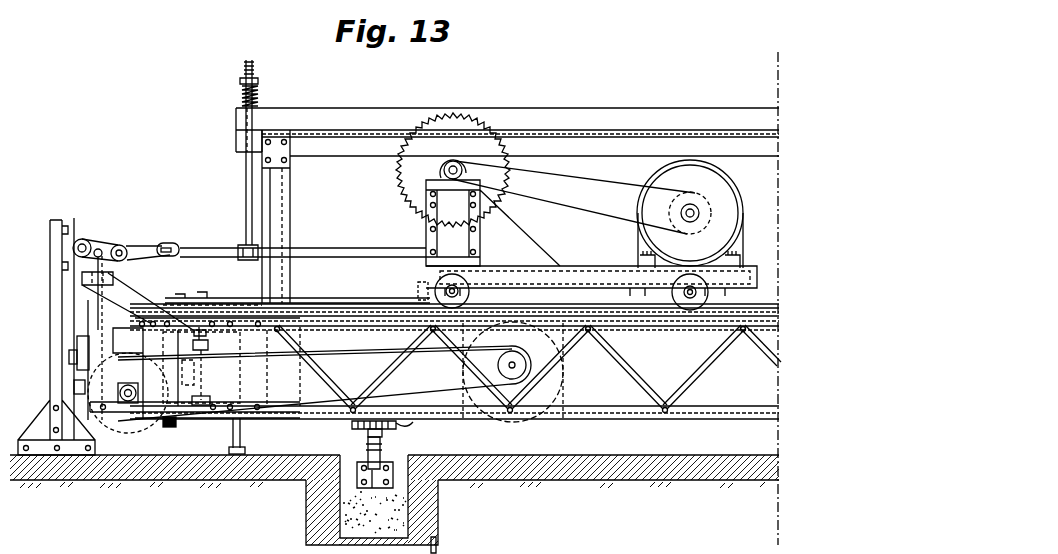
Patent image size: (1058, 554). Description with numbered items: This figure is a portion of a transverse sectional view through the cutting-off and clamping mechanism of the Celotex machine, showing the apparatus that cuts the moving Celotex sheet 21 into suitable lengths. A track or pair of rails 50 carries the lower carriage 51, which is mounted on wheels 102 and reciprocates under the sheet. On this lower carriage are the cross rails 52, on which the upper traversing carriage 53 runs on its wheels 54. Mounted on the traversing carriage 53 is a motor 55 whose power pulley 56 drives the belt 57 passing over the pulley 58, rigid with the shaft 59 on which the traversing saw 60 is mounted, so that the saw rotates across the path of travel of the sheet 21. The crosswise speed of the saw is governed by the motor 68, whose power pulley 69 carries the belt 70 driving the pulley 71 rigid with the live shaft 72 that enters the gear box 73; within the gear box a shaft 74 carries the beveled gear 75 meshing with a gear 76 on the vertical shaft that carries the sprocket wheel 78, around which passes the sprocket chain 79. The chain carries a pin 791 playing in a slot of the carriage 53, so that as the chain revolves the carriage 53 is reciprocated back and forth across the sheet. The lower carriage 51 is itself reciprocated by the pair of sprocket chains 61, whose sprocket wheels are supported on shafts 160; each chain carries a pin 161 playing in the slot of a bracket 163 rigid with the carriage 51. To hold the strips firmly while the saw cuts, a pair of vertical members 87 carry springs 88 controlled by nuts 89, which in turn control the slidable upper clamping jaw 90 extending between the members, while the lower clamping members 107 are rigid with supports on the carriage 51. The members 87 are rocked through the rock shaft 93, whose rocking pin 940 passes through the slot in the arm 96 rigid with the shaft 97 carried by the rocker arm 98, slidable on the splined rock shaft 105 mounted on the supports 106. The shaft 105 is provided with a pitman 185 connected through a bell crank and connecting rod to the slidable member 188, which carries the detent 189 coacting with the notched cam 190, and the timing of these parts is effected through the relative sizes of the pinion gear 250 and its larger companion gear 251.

The Celotex sheet 21 is at (622, 138).
The track or pair of rails 50 is at (245, 451).
The lower carriage 51 is at (623, 332).
The cross rails 52 is at (424, 303).
The upper traversing carriage 53 is at (590, 287).
The wheels 54 is at (470, 291).
The motor 55 is at (725, 183).
The power pulley 56 is at (678, 211).
The belt 57 is at (580, 180).
The pulley 58 is at (458, 162).
The shaft 59 is at (443, 167).
The traversing saw 60 is at (398, 171).
The sprocket chains 61 is at (384, 436).
The motor 68 is at (565, 353).
The power pulley 69 is at (508, 364).
The belt 70 is at (390, 356).
The pulley 71 is at (128, 427).
The shaft 72 is at (126, 385).
The gear box 73 is at (124, 334).
The shaft 74 is at (188, 384).
The beveled gear 75 is at (199, 371).
The gear 76 is at (208, 347).
The sprocket wheel 78 is at (206, 301).
The sprocket chain 79 is at (325, 306).
The vertical members 87 is at (248, 178).
The springs 88 is at (240, 97).
The nuts 89 is at (258, 84).
The upper clamping jaw 90 is at (585, 118).
The rock shaft 93 is at (363, 256).
The arm 96 is at (144, 247).
The shaft 97 is at (120, 245).
The rocker arm 98 is at (100, 244).
The wheels 102 is at (241, 431).
The splined rock shaft 105 is at (84, 239).
The supports 106 is at (37, 418).
The lower clamping members 107 is at (313, 148).
The shafts 160 is at (367, 449).
The pin 161 is at (356, 429).
The brackets 163 is at (410, 426).
The pitman 185 is at (103, 269).
The slidable member 188 is at (74, 388).
The detent 189 is at (69, 357).
The cam 190 is at (77, 340).
The pinion gear 250 is at (205, 397).
The companion gear 251 is at (176, 426).
The pin 791 is at (420, 281).
The rocking pin 940 is at (172, 245).